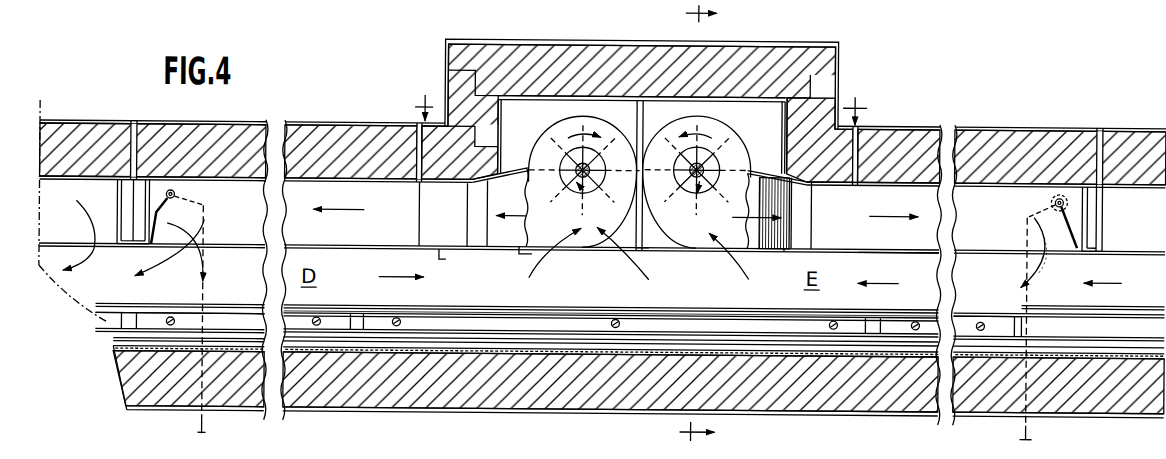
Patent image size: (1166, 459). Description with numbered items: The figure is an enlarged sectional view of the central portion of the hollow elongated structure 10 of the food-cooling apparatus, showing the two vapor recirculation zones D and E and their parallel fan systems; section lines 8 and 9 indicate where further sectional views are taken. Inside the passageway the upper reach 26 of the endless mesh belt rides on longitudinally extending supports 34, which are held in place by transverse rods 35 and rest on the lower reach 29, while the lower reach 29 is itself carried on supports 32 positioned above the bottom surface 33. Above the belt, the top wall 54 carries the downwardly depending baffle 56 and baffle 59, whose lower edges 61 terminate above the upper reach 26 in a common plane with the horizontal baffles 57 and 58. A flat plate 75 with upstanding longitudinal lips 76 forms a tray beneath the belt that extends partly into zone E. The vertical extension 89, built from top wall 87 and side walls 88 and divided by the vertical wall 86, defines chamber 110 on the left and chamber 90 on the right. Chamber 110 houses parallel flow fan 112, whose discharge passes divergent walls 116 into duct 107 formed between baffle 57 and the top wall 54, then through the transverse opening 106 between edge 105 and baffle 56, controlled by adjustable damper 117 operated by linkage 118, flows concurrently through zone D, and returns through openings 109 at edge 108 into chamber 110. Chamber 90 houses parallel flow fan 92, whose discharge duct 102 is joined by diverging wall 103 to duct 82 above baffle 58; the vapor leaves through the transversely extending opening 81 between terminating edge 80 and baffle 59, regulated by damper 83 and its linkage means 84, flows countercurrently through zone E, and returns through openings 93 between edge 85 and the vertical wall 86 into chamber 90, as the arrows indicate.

The section line 8- 8 is at (714, 223).
The section line 9- 9 is at (637, 102).
The hollow elongated structure 10 is at (1094, 114).
The upper reach of belt 26 is at (190, 305).
The lower reach of belt 29 is at (245, 333).
The supports 32 is at (492, 343).
The bottom surface 33 is at (660, 348).
The supports 34 is at (562, 320).
The transverse rods 35 is at (403, 309).
The top wall 54 is at (347, 178).
The baffle 56 is at (118, 198).
The horizontal baffle 57 is at (447, 252).
The horizontal baffle 58 is at (882, 252).
The baffle 59 is at (1089, 227).
The lower edges 61 is at (1094, 250).
The flat plate 75 is at (1128, 314).
The upstanding longitudinal lips 76 is at (1157, 302).
The terminating edge 80 is at (1036, 240).
The transversely extending opening 81 is at (1068, 256).
The duct 82 is at (966, 218).
The damper 83 is at (1052, 200).
The linkage means 84 is at (1025, 421).
The edge 85 is at (747, 250).
The vertical wall 86 is at (645, 96).
The top wall 87 is at (549, 97).
The side walls 88 is at (510, 100).
The vertical extension 89 is at (638, 91).
The chamber 90 is at (650, 123).
The parallel flow fan 92 is at (748, 128).
The openings 93 is at (670, 248).
The discharge duct 102 is at (763, 172).
The diverging wall 103 is at (813, 200).
The edge 105 is at (207, 222).
The transverse opening 106 is at (206, 262).
The duct 107 is at (378, 227).
The edge 108 is at (525, 250).
The openings 109 is at (596, 256).
The chamber 110 is at (511, 124).
The parallel flow fan 112 is at (632, 130).
The divergent walls 116 is at (468, 198).
The adjustable damper 117 is at (150, 250).
The linkage 118 is at (201, 419).